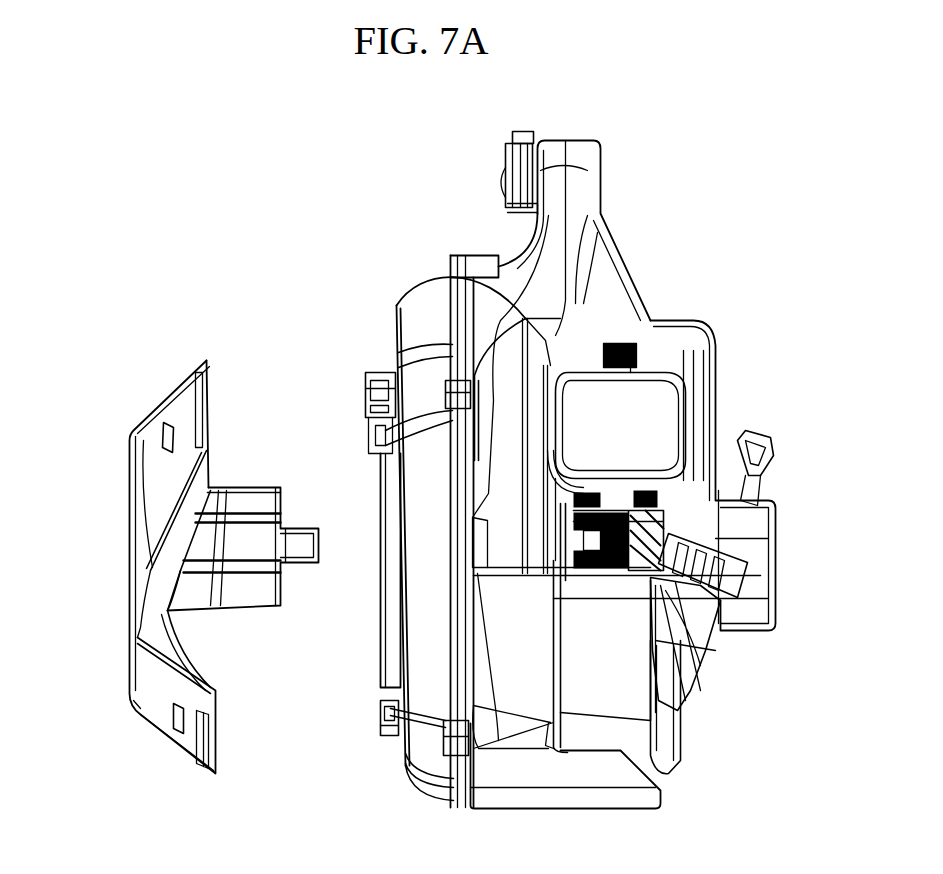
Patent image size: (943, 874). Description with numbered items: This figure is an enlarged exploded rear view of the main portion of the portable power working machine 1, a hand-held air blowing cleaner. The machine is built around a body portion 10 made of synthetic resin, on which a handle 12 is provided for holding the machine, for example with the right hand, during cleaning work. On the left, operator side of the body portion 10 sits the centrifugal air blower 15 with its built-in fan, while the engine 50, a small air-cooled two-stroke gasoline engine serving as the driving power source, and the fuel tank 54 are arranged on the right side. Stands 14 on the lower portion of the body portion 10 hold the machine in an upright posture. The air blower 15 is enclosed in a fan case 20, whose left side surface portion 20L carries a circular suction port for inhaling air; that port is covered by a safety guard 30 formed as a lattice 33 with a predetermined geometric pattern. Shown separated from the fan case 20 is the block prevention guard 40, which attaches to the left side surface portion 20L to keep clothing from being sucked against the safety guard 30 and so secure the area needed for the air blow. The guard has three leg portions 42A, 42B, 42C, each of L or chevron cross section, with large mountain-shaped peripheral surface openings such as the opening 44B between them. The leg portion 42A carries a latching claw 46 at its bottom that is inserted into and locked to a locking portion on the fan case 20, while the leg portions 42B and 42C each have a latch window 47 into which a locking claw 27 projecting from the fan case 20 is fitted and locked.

The portable power working machine 1 is at (260, 258).
The body portion 10 is at (560, 625).
The handle 12 is at (576, 188).
The stands 14 is at (601, 800).
The centrifugal air blower 15 is at (429, 283).
The fan case 20 is at (473, 496).
The left side surface portion 20L is at (394, 545).
The locking claw 27 is at (380, 450).
The safety guard 30 is at (374, 632).
The lattice 33 is at (345, 591).
The block prevention guard 40 is at (122, 588).
The leg portion 42A is at (243, 487).
The leg portion 42B is at (127, 462).
The leg portion 42C is at (138, 717).
The peripheral surface opening 44B is at (148, 545).
The latching claw 46 is at (302, 540).
The latch window 47 is at (160, 440).
The engine 50 is at (731, 396).
The fuel tank 54 is at (680, 708).